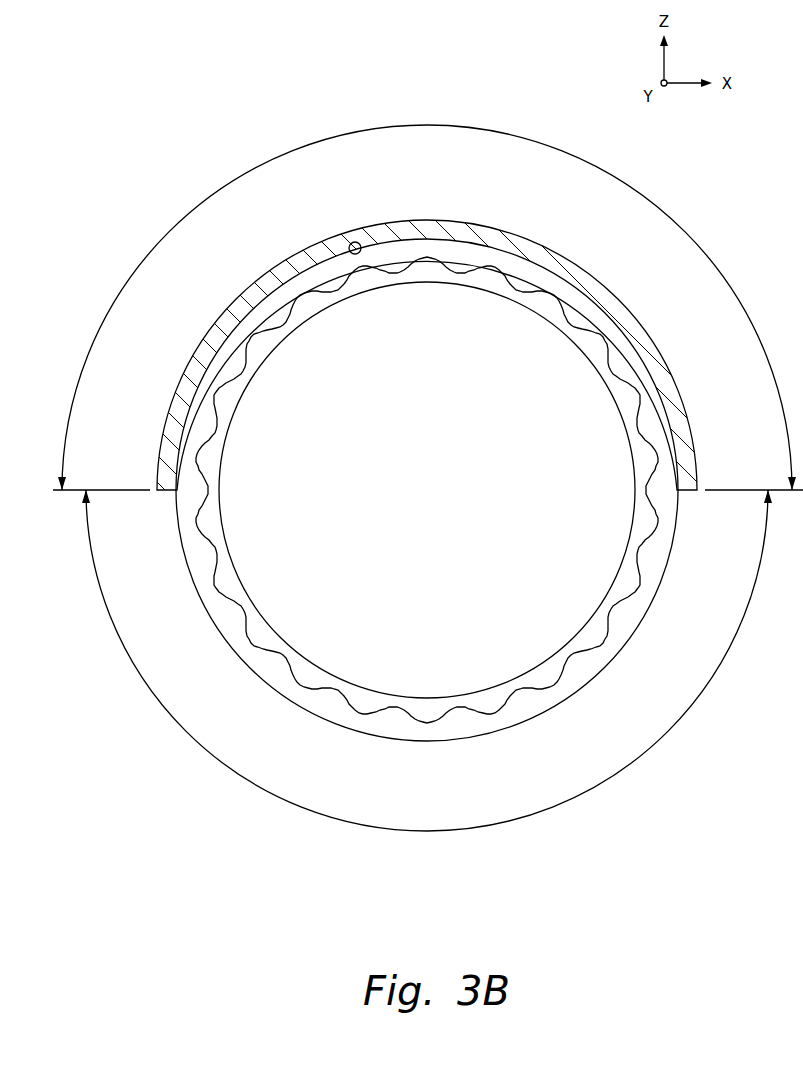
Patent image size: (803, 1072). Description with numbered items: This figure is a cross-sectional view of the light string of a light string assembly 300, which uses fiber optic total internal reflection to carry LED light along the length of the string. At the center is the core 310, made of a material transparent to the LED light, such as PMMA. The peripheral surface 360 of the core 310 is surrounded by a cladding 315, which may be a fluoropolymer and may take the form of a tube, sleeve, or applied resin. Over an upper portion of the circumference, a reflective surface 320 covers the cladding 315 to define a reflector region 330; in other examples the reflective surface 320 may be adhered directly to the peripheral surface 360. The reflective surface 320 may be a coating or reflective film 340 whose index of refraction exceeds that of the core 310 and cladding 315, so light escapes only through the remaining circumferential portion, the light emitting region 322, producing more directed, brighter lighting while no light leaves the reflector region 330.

The light string assembly 300 is at (174, 114).
The reflector region 330 is at (437, 125).
The light emitting region 322 is at (419, 832).
The reflective film 340 is at (263, 279).
The reflective surface 320 is at (501, 258).
The core 310 is at (411, 499).
The cladding 315 is at (427, 707).
The peripheral surface 360 is at (356, 254).